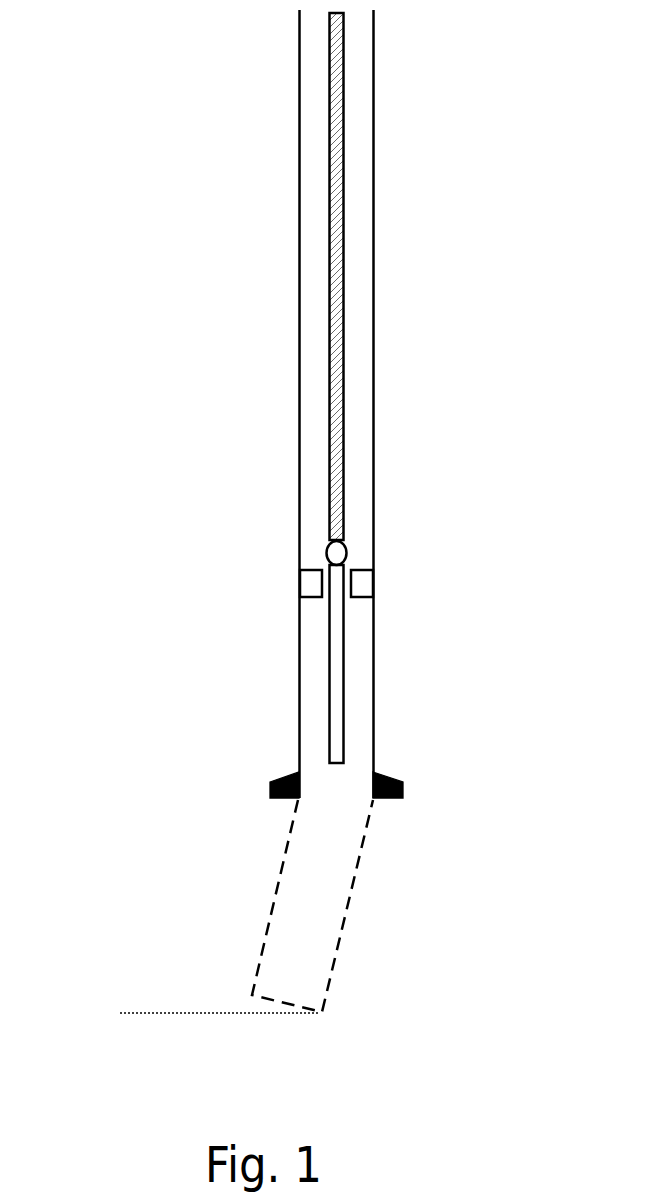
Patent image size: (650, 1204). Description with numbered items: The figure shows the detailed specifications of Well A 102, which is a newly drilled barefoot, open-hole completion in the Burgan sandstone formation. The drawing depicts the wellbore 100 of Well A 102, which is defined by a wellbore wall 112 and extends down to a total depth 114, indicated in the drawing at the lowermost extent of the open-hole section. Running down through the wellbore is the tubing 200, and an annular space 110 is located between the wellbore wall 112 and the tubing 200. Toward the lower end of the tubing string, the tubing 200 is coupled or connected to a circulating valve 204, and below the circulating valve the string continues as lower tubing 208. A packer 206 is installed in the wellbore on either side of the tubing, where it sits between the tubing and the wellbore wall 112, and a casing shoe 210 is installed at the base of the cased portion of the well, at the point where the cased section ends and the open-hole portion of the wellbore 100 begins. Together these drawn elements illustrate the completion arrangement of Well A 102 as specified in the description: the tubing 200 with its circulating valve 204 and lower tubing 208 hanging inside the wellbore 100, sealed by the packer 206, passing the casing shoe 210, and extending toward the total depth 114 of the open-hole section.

The wellbore 100 is at (88, 125).
The Well A 102 is at (312, 888).
The annular space 110 is at (312, 157).
The wellbore wall 112 is at (299, 327).
The total depth 114 is at (196, 1014).
The tubing 200 is at (336, 78).
The circulating valve 204 is at (338, 548).
The packer 206 is at (362, 583).
The lower tubing 208 is at (345, 672).
The casing shoe 210 is at (385, 797).